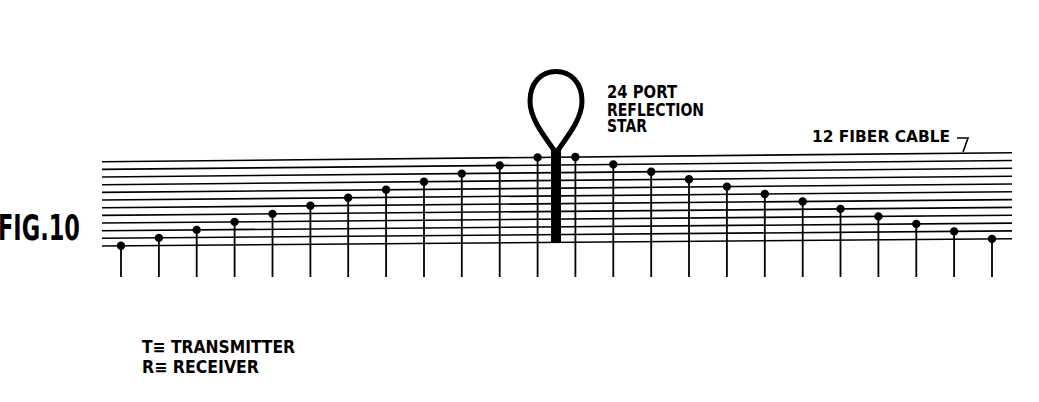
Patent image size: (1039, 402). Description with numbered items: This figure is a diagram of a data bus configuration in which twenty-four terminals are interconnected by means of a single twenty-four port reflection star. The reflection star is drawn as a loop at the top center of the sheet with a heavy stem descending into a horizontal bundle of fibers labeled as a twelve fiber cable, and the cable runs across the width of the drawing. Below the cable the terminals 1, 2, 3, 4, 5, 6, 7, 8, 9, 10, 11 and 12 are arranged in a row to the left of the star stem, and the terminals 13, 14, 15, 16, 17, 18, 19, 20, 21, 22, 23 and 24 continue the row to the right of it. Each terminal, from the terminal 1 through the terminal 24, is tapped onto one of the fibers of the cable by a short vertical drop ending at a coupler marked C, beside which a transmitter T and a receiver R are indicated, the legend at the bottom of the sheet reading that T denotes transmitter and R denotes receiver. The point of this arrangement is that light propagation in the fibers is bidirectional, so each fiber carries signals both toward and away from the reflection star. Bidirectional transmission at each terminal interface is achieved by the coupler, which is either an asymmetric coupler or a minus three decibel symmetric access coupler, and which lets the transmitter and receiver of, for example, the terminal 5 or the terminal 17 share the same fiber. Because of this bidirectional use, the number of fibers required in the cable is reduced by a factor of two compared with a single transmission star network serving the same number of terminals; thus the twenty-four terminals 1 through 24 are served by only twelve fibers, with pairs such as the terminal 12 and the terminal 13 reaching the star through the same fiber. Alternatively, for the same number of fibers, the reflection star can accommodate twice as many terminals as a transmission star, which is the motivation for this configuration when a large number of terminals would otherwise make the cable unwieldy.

The terminal 1 is at (128, 280).
The terminal 2 is at (166, 275).
The terminal 3 is at (204, 271).
The terminal 4 is at (242, 267).
The terminal 5 is at (280, 263).
The terminal 6 is at (318, 260).
The terminal 7 is at (356, 256).
The terminal 8 is at (394, 251).
The terminal 9 is at (431, 247).
The terminal 10 is at (467, 243).
The terminal 11 is at (505, 239).
The terminal 12 is at (542, 235).
The terminal 13 is at (580, 235).
The terminal 14 is at (618, 238).
The terminal 15 is at (656, 243).
The terminal 16 is at (694, 246).
The terminal 17 is at (732, 249).
The terminal 18 is at (770, 253).
The terminal 19 is at (808, 257).
The terminal 20 is at (845, 261).
The terminal 21 is at (883, 264).
The terminal 22 is at (921, 268).
The terminal 23 is at (959, 272).
The terminal 24 is at (997, 276).